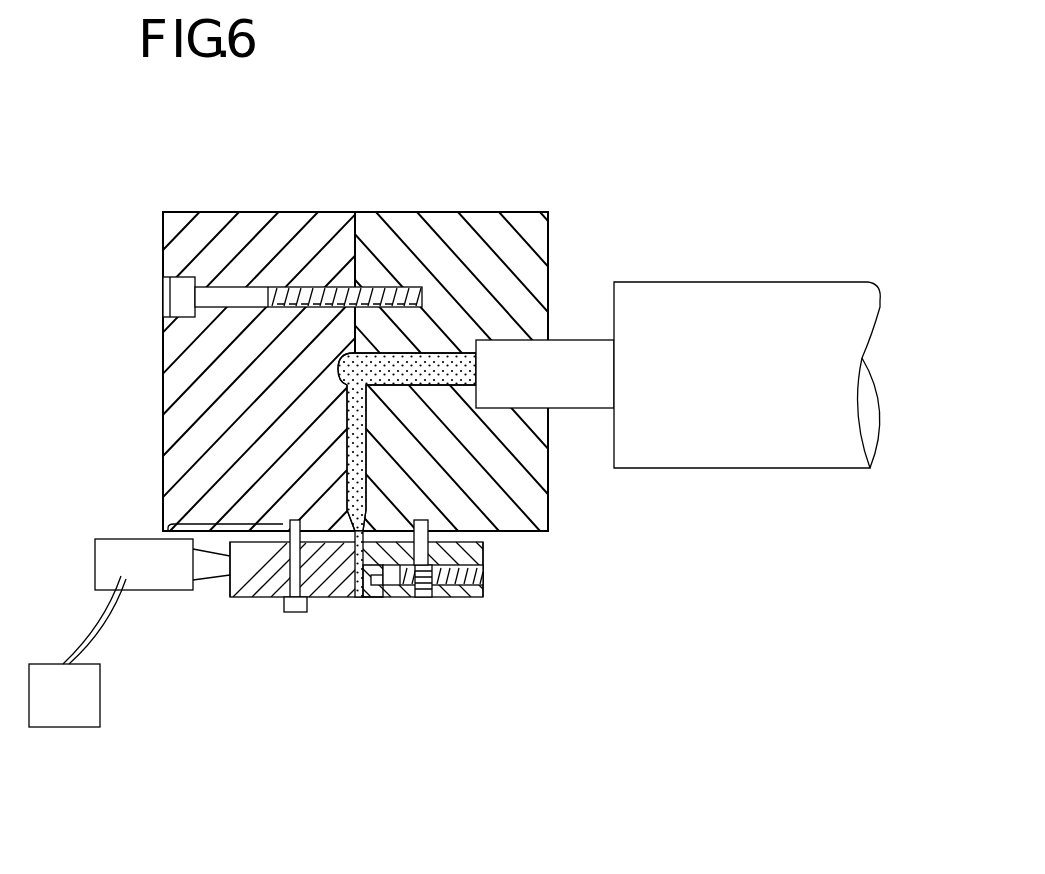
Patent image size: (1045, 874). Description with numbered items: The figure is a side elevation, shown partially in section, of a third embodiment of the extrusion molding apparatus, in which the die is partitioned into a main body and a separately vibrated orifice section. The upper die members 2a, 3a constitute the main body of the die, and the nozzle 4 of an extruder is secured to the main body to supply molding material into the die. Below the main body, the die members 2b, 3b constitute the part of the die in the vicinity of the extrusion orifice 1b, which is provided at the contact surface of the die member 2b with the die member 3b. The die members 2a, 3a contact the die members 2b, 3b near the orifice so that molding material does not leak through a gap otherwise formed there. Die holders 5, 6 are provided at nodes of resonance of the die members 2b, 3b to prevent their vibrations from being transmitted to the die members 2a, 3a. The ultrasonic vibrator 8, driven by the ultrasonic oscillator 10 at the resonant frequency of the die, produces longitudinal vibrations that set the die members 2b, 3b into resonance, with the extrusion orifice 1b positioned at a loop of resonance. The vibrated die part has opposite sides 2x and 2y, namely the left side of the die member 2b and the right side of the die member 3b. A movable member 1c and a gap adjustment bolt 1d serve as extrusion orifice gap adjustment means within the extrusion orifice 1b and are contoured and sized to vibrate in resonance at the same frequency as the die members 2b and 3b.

The die member 2a is at (288, 220).
The die member 3a is at (485, 222).
The nozzle 4 is at (578, 340).
The die holder 5 is at (283, 527).
The die holder 6 is at (430, 520).
The ultrasonic vibrator 8 is at (173, 585).
The ultrasonic oscillator 10 is at (92, 690).
The die member 2b is at (263, 597).
The side of die part 2x is at (229, 597).
The side of die part 2y is at (483, 592).
The extrusion orifice 1b is at (357, 598).
The movable member 1c is at (378, 598).
The gap adjustment bolt 1d is at (424, 598).
The die member 3b is at (482, 558).